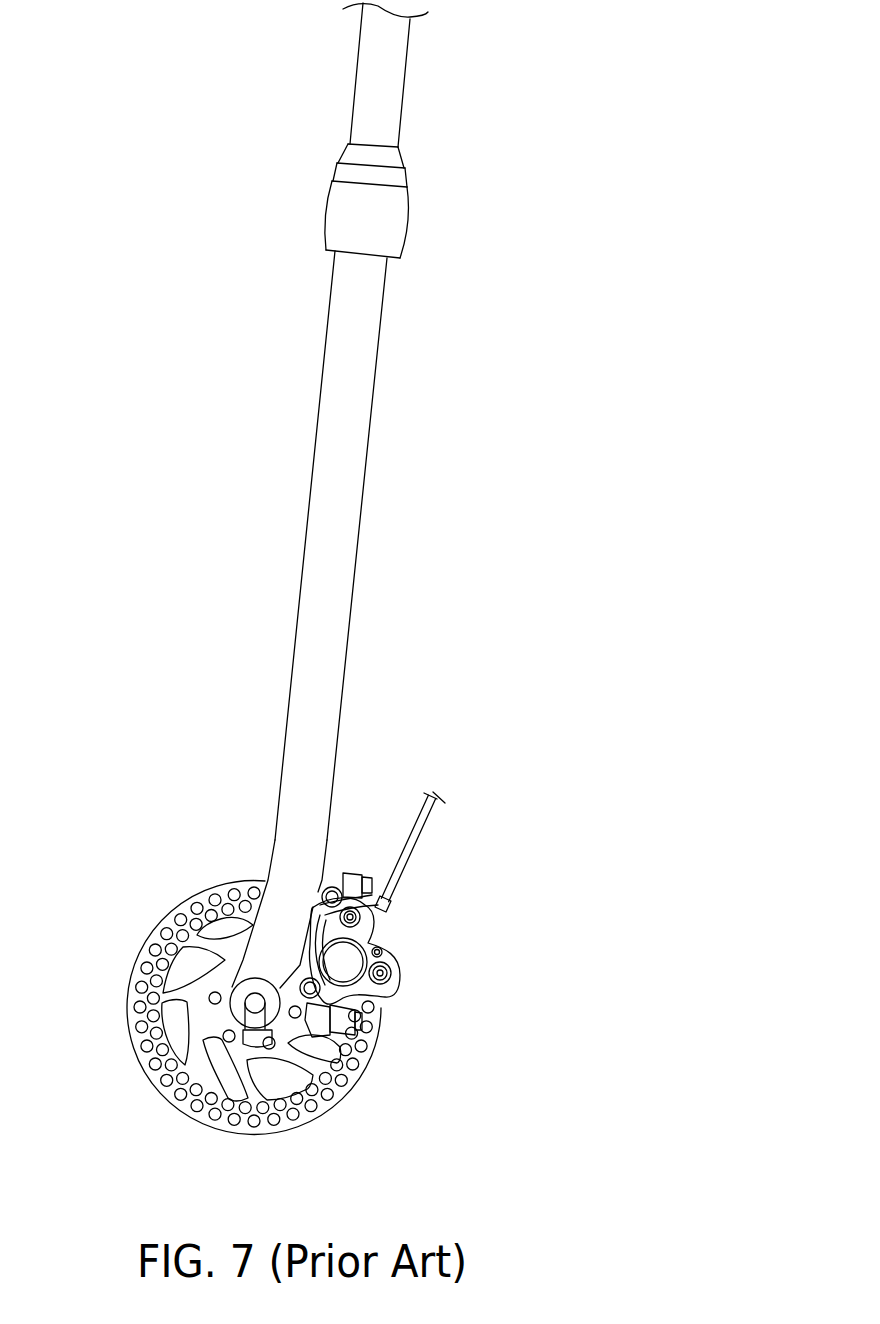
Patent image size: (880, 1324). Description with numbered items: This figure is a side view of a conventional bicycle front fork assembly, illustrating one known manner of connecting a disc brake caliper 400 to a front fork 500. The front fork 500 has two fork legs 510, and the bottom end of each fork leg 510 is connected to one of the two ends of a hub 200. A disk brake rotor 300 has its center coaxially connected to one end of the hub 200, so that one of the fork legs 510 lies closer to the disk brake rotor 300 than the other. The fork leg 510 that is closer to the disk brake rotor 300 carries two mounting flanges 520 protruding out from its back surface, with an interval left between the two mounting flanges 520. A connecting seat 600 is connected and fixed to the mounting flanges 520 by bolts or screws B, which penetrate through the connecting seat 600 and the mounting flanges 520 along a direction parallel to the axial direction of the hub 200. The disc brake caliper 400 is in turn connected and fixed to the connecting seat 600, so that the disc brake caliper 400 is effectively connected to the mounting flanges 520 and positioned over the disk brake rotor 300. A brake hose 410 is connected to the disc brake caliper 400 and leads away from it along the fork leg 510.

The hub 200 is at (207, 1072).
The disk brake rotor 300 is at (360, 1108).
The disc brake caliper 400 is at (415, 977).
The brake hose 410 is at (432, 822).
The front fork 500 is at (314, 316).
The fork leg 510 is at (362, 508).
The mounting flange 520 is at (373, 903).
The connecting seat 600 is at (342, 865).
The bolts or screws B is at (305, 893).